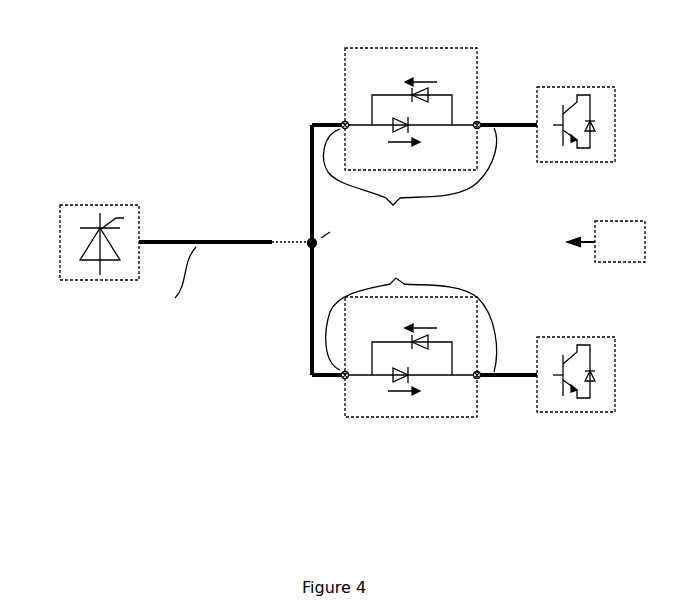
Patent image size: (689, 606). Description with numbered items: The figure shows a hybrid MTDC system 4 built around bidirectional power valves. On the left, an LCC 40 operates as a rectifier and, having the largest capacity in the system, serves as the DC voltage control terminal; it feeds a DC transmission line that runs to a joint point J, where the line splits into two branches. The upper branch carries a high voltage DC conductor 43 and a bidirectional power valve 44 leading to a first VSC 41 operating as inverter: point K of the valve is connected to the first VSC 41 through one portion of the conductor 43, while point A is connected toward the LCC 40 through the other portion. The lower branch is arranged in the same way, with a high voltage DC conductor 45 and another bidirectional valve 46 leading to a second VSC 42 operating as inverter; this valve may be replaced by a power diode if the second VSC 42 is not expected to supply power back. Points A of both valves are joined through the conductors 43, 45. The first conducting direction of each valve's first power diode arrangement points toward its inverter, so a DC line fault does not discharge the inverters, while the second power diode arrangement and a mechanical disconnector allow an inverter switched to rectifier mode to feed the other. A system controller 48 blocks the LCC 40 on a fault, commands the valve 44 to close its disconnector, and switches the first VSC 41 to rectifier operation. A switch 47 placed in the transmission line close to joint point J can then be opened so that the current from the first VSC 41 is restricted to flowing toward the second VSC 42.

The hybrid MTDC system 4 is at (570, 503).
The LCC 40 is at (64, 278).
The first VSC 41 is at (600, 90).
The second VSC 42 is at (604, 408).
The high voltage DC conductor 43 is at (410, 145).
The bidirectional power valve 44 is at (462, 52).
The high voltage DC conductor 45 is at (411, 332).
The bidirectional valve 46 is at (435, 408).
The switch 47 is at (291, 241).
The system controller 48 is at (606, 241).